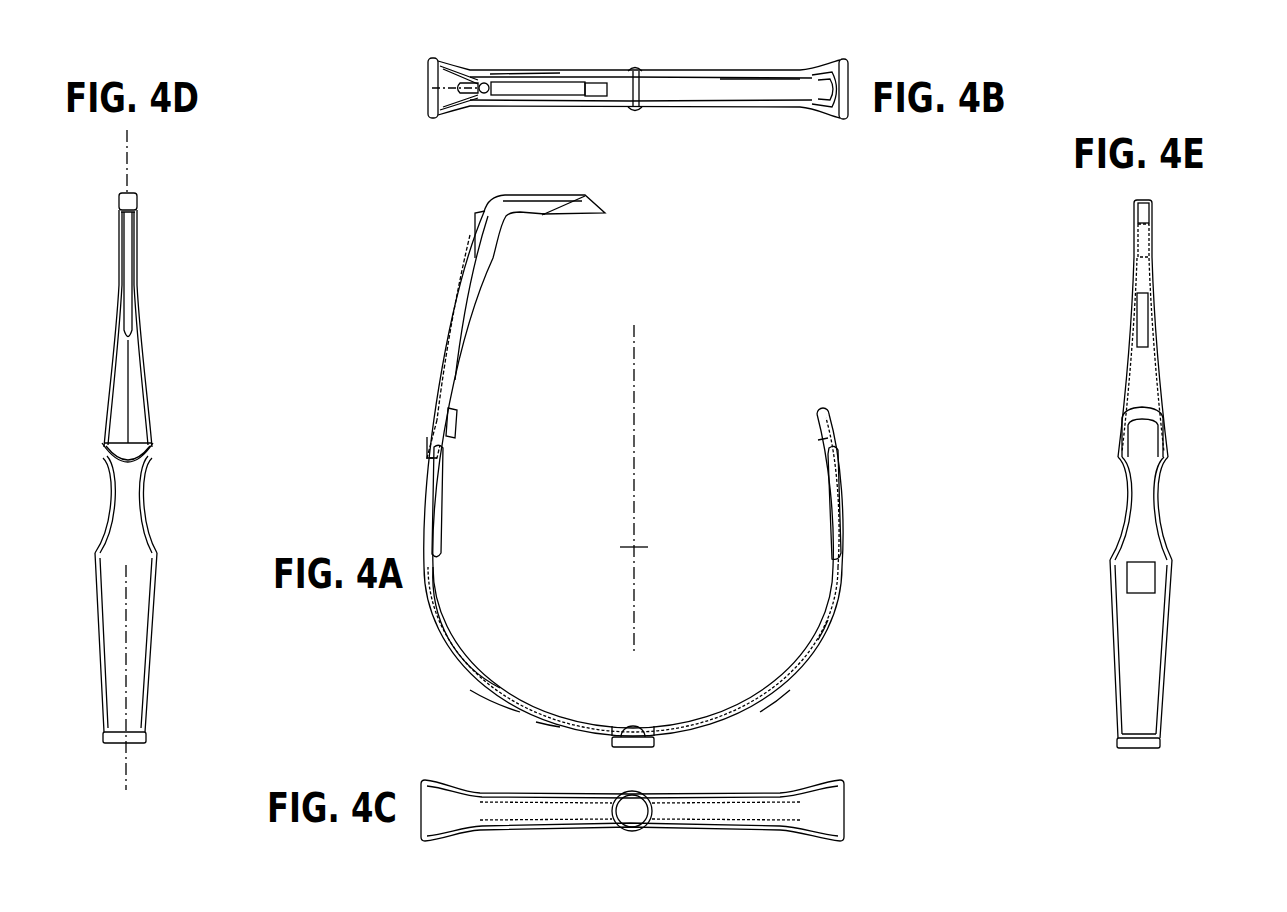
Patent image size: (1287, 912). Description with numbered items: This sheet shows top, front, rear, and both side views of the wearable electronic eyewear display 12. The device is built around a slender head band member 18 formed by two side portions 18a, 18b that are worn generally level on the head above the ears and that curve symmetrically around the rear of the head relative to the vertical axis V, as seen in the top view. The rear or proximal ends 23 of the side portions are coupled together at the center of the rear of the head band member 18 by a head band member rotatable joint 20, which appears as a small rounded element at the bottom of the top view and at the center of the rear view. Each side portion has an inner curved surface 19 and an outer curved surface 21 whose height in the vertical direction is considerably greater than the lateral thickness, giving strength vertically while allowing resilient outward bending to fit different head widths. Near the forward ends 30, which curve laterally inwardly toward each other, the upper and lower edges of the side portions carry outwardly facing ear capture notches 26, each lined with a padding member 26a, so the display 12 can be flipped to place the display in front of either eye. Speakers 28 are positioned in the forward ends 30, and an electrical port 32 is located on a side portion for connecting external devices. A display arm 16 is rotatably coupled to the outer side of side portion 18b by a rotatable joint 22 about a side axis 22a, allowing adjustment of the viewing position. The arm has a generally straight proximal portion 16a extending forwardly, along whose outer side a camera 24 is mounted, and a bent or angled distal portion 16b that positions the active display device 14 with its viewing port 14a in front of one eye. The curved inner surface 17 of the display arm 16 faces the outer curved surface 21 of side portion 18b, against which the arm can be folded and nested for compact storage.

In FIG. 4B, the wearable electronic eyewear display 12 is at (412, 128).
In FIG. 4A, the wearable electronic eyewear display 12 is at (634, 479).
In FIG. 4C, the wearable electronic eyewear display 12 is at (632, 810).
In FIG. 4D, the wearable electronic eyewear display 12 is at (130, 152).
In FIG. 4E, the wearable electronic eyewear display 12 is at (1086, 312).
In FIG. 4B, the active display device 14 is at (599, 98).
In FIG. 4A, the active display device 14 is at (612, 229).
In FIG. 4D, the active display device 14 is at (136, 200).
In FIG. 4E, the active display device 14 is at (1138, 215).
In FIG. 4A, the viewing port 14a is at (598, 214).
In FIG. 4B, the display arm 16 is at (527, 85).
In FIG. 4A, the display arm 16 is at (443, 340).
In FIG. 4D, the display arm 16 is at (78, 379).
In FIG. 4E, the display arm 16 is at (1135, 371).
In FIG. 4A, the proximal portion 16a is at (443, 378).
In FIG. 4A, the distal portion 16b is at (545, 207).
In FIG. 4A, the inner surface 17 is at (480, 290).
In FIG. 4B, the head band member 18 is at (710, 108).
In FIG. 4A, the head band member 18 is at (796, 683).
In FIG. 4D, the head band member 18 is at (150, 638).
In FIG. 4E, the head band member 18 is at (1112, 640).
In FIG. 4B, the side portion 18a is at (752, 97).
In FIG. 4A, the side portion 18a is at (762, 712).
In FIG. 4E, the side portion 18a is at (1132, 684).
In FIG. 4B, the side portion 18b is at (567, 72).
In FIG. 4A, the side portion 18b is at (490, 695).
In FIG. 4D, the side portion 18b is at (133, 685).
In FIG. 4A, the inner curved surface 19 is at (558, 712).
In FIG. 4B, the rotatable joint 20 is at (640, 71).
In FIG. 4A, the rotatable joint 20 is at (640, 747).
In FIG. 4C, the rotatable joint 20 is at (624, 800).
In FIG. 4E, the rotatable joint 20 is at (1134, 749).
In FIG. 4A, the outer curved surface 21 is at (533, 725).
In FIG. 4A, the rotatable joint 22 is at (381, 432).
In FIG. 4D, the rotatable joint 22 is at (183, 433).
In FIG. 4A, the side axis 22a is at (432, 444).
In FIG. 4D, the side axis 22a is at (127, 443).
In FIG. 4A, the rear end 23 is at (614, 724).
In FIG. 4B, the camera 24 is at (487, 94).
In FIG. 4A, the camera 24 is at (484, 214).
In FIG. 4D, the camera 24 is at (134, 212).
In FIG. 4A, the notch 26 is at (689, 502).
In FIG. 4D, the notch 26 is at (145, 503).
In FIG. 4E, the notch 26 is at (1126, 508).
In FIG. 4A, the padding member 26a is at (438, 515).
In FIG. 4D, the padding member 26a is at (112, 500).
In FIG. 4E, the padding member 26a is at (1178, 504).
In FIG. 4A, the speaker 28 is at (457, 426).
In FIG. 4B, the forward end 30 is at (812, 98).
In FIG. 4A, the forward end 30 is at (458, 412).
In FIG. 4E, the forward end 30 is at (1140, 450).
In FIG. 4E, the electrical port 32 is at (1138, 583).